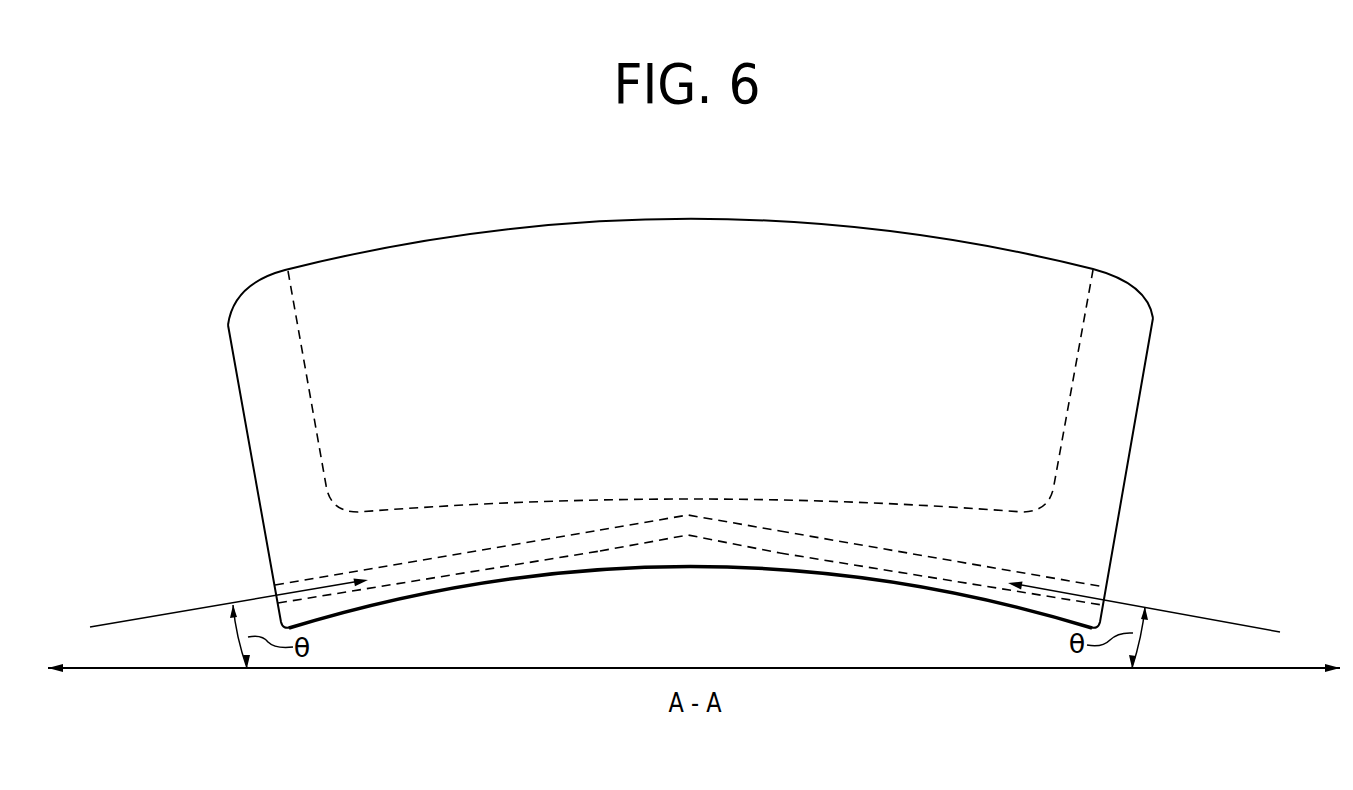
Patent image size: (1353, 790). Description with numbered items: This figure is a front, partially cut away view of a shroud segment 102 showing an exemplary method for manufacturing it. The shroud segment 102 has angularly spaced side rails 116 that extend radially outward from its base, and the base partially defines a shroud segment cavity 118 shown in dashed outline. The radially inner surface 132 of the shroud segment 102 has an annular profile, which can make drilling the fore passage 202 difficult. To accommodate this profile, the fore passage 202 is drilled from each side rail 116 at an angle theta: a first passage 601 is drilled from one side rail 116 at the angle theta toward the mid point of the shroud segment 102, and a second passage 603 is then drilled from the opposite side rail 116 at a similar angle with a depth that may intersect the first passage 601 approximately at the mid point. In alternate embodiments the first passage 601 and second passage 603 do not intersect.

The shroud segment 102 is at (1084, 226).
The side rails 116 is at (233, 372).
The shroud segment cavity 118 is at (711, 283).
The radially inner surface 132 is at (527, 580).
The fore passage 202 is at (688, 530).
The first passage 601 is at (440, 567).
The second passage 603 is at (935, 565).